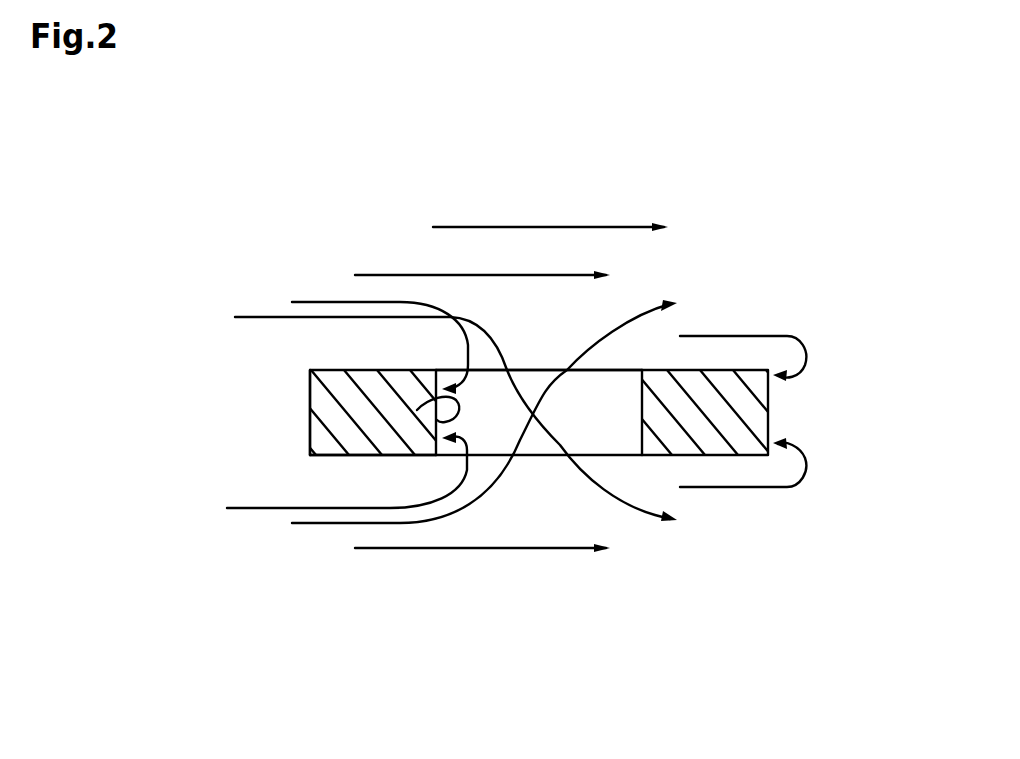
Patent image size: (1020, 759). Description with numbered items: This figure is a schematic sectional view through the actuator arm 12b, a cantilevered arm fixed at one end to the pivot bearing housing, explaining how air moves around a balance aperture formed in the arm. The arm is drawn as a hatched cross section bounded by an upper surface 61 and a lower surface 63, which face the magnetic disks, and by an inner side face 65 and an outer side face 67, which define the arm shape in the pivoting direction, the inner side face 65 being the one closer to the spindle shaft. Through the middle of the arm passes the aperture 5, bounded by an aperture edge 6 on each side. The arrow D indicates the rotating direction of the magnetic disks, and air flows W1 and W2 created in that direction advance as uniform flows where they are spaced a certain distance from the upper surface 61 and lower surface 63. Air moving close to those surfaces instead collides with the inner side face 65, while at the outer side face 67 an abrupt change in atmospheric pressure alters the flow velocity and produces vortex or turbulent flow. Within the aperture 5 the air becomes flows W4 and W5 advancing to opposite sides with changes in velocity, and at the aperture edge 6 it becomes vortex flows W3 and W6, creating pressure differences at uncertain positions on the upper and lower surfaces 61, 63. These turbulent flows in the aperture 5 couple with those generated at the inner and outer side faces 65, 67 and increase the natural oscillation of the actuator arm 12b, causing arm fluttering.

The actuator arm 12b is at (310, 370).
The aperture 5 is at (535, 370).
The upper surface 61 is at (373, 370).
The lower surface 63 is at (345, 457).
The inner side face 65 is at (310, 430).
The outer side face 67 is at (770, 415).
The aperture edge 6 is at (417, 410).
The arrow indicating rotating direction of magnetic disks D is at (540, 227).
The air flow W1 is at (430, 275).
The air flow W2 is at (490, 548).
The vortex flow W3 is at (265, 317).
The air flow W4 is at (465, 505).
The air flow W5 is at (317, 302).
The vortex flow W6 is at (265, 508).